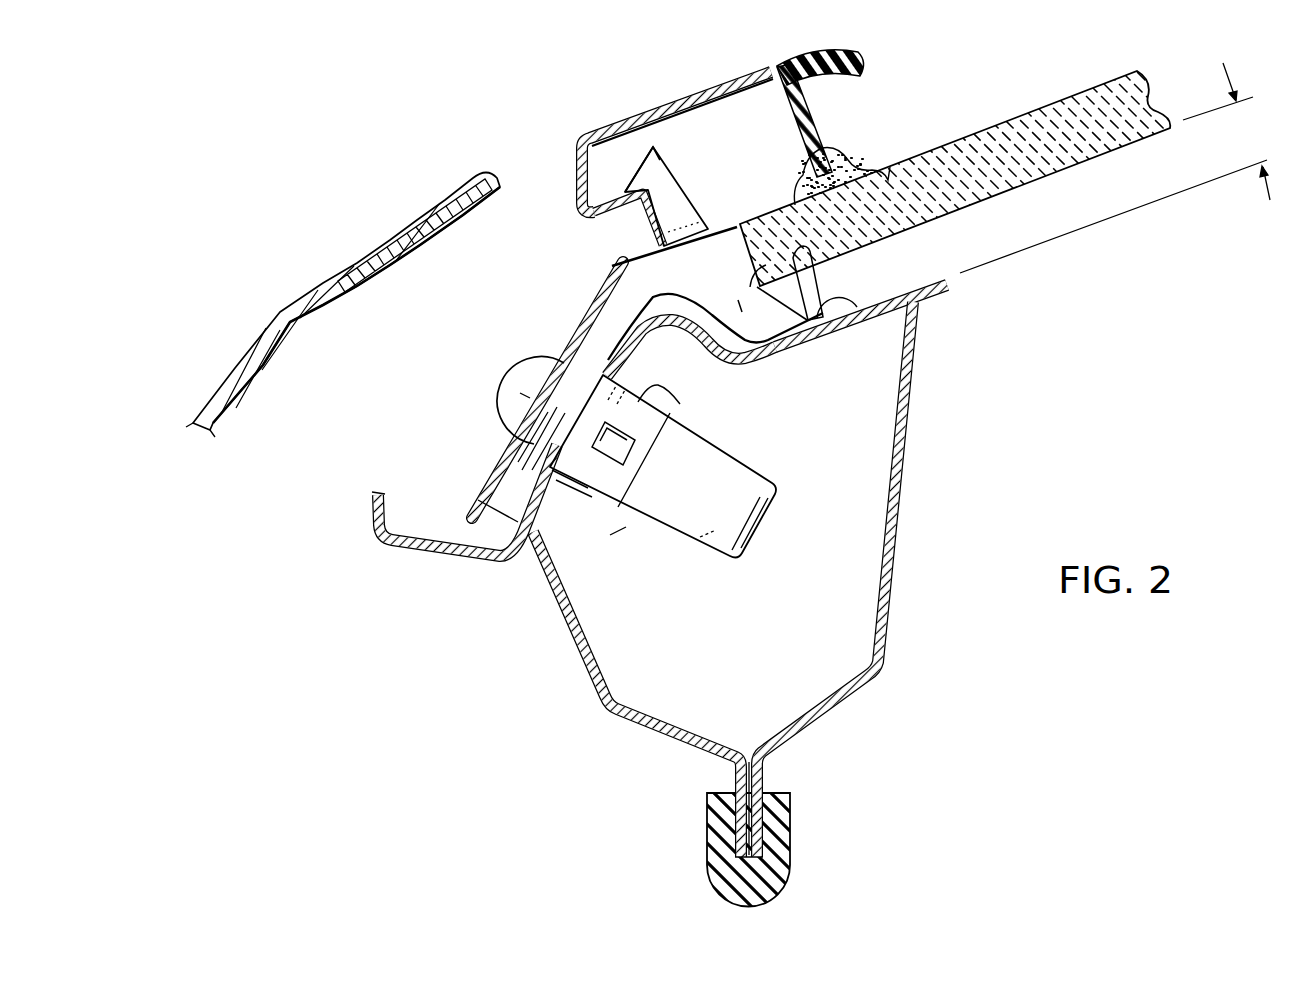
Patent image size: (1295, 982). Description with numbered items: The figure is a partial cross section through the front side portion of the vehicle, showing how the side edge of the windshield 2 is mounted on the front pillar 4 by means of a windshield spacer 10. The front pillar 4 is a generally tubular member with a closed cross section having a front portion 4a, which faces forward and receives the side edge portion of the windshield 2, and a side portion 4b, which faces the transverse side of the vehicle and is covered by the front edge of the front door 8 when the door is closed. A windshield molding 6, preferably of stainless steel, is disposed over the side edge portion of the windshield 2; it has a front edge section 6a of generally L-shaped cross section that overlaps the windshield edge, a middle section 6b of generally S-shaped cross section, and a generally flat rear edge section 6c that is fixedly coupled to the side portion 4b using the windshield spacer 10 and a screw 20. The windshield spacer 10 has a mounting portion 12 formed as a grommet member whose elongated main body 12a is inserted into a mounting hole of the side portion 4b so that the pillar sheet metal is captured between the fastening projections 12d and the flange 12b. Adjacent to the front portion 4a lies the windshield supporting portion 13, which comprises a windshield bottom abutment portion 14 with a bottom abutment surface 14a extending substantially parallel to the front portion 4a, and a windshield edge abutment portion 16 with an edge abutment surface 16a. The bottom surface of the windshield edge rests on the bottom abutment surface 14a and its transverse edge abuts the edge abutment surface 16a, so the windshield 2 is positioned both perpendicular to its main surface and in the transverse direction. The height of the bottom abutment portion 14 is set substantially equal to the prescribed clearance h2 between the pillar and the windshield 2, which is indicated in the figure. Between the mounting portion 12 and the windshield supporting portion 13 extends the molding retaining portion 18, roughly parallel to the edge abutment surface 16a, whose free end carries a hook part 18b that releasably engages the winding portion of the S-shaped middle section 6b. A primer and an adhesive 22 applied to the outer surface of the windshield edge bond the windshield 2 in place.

The windshield 2 is at (1037, 140).
The front pillar 4 is at (697, 574).
The front portion 4a is at (905, 287).
The side portion 4b is at (640, 356).
The windshield molding 6 is at (668, 277).
The front edge section 6a is at (713, 96).
The middle section 6b is at (587, 213).
The rear edge section 6c is at (586, 331).
The front door 8 is at (268, 332).
The windshield spacer 10 is at (615, 531).
The mounting portion 12 is at (617, 501).
The main body 12a is at (723, 483).
The flange 12b is at (473, 540).
The fastening projections 12d is at (632, 432).
The windshield supporting portion 13 is at (738, 305).
The windshield bottom abutment portion 14 is at (825, 308).
The bottom abutment surface 14a is at (830, 275).
The windshield edge abutment portion 16 is at (733, 311).
The edge abutment surface 16a is at (806, 330).
The molding retaining portion 18 is at (700, 194).
The hook part 18b is at (650, 170).
The screw 20 is at (513, 410).
The adhesive 22 is at (830, 173).
The prescribed clearance h2 is at (1115, 168).